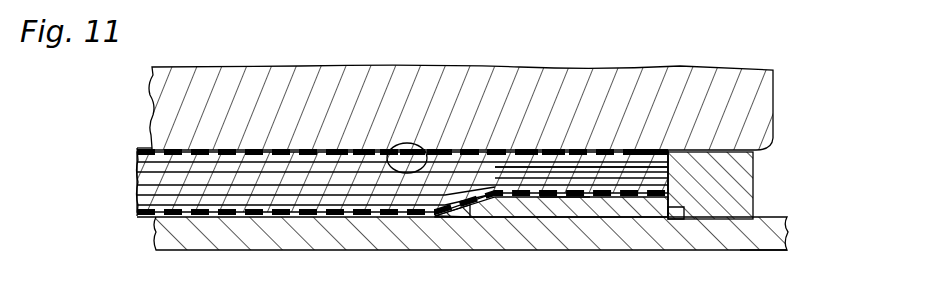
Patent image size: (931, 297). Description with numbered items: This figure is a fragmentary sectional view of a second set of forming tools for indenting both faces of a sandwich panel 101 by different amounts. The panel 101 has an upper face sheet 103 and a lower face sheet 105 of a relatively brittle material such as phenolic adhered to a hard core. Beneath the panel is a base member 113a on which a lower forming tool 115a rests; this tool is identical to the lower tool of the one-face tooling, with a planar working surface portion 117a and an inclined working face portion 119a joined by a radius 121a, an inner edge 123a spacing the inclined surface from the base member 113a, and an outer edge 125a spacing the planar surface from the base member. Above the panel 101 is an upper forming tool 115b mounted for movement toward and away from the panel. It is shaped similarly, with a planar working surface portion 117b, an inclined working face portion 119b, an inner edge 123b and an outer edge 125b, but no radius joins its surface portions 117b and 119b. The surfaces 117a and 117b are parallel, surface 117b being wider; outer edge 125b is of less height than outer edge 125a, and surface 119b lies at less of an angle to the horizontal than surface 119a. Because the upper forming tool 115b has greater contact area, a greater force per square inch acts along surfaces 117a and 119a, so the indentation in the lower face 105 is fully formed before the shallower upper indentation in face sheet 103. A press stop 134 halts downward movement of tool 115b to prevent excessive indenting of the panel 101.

The sandwich panel 101 is at (137, 183).
The face sheet 103 is at (200, 150).
The face sheet 105 is at (217, 250).
The press stop 134 is at (733, 206).
The base member 113a is at (747, 240).
The lower forming tool 115a is at (557, 213).
The upper forming tool 115b is at (482, 150).
The planar working surface portion 117a is at (668, 182).
The planar working surface portion 117b is at (536, 150).
The inclined working face portion 119a is at (442, 218).
The inclined working face portion 119b is at (424, 150).
The radius 121a is at (490, 220).
The inner edge 123a is at (395, 218).
The inner edge 123b is at (360, 150).
The outer edge 125a is at (682, 213).
The outer edge 125b is at (690, 150).